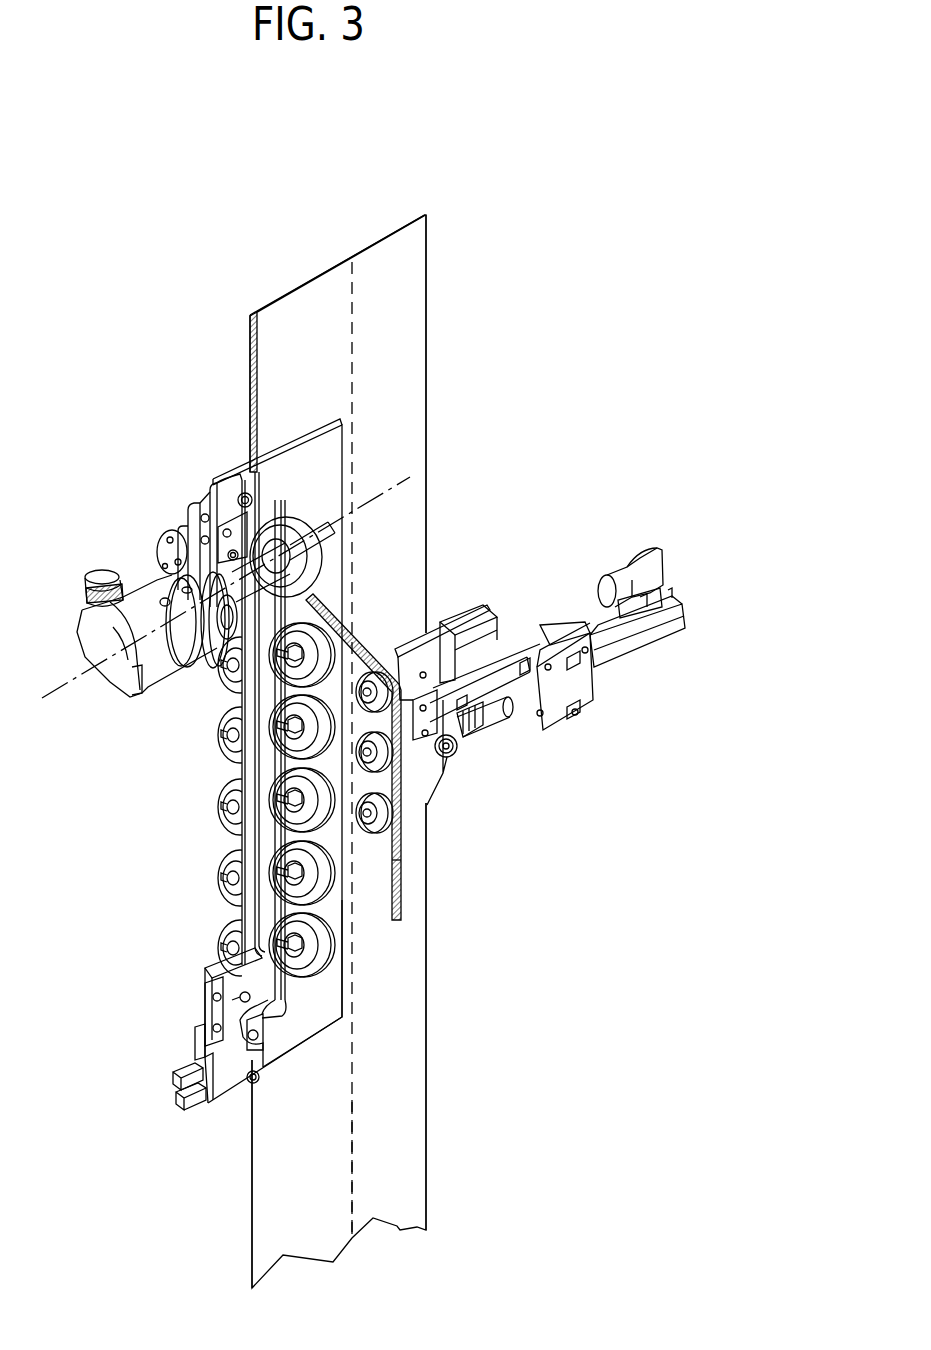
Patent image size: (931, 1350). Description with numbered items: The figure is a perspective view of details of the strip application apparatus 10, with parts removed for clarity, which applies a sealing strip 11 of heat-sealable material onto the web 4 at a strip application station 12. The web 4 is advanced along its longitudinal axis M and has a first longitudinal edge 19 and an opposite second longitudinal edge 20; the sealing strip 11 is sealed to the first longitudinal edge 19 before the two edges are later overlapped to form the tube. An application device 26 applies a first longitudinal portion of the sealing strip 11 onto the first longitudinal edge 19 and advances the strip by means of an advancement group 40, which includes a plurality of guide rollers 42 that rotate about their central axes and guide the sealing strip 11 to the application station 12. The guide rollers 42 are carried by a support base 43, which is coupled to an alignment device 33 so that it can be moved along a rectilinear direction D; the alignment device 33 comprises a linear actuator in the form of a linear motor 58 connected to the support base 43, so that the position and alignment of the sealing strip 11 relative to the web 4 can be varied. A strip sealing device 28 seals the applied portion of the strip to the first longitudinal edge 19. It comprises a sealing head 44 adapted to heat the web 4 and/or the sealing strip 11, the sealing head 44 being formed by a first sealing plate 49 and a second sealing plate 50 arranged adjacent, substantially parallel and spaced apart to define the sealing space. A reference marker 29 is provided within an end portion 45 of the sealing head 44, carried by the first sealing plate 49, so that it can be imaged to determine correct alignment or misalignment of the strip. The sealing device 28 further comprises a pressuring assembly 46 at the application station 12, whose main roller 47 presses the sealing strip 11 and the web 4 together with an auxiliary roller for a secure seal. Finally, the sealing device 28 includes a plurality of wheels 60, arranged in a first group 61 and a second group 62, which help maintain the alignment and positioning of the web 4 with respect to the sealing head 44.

The strip application apparatus 10 is at (603, 1028).
The web 4 is at (445, 343).
The second longitudinal edge 20 is at (428, 261).
The first longitudinal edge 19 is at (251, 1240).
The application device 26 is at (446, 910).
The sealing head 44 is at (361, 449).
The longitudinal axis M is at (352, 1183).
The end portion 45 is at (310, 449).
The first group 61 is at (319, 996).
The strip application station 12 is at (259, 516).
The reference marker 29 is at (223, 465).
The second sealing plate 50 is at (226, 472).
The strip sealing device 28 is at (218, 421).
The main roller 47 is at (300, 536).
The pressuring assembly 46 is at (330, 549).
The sealing strip 11 is at (401, 900).
The wheels 60 is at (285, 672).
The guide rollers 42 is at (361, 680).
The advancement group 40 is at (423, 775).
The alignment device 33 is at (597, 561).
The rectilinear direction D is at (554, 585).
The support base 43 is at (431, 660).
The linear motor 58 is at (493, 730).
The second group 62 is at (199, 954).
The first sealing plate 49 is at (253, 1083).